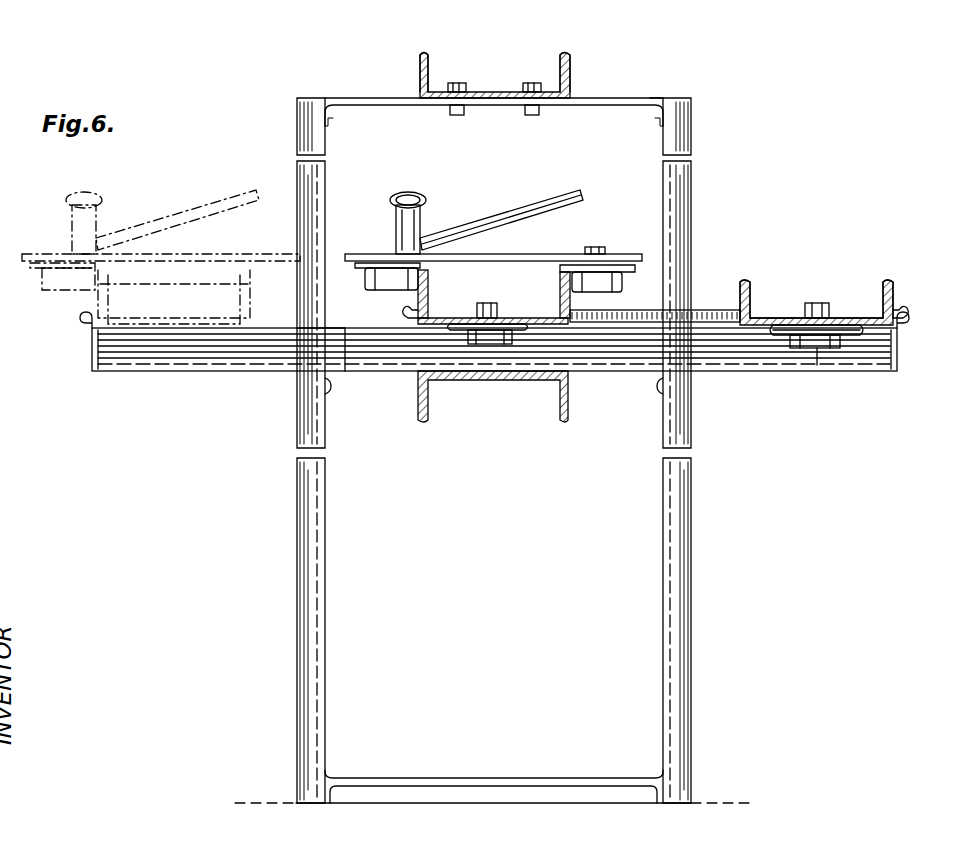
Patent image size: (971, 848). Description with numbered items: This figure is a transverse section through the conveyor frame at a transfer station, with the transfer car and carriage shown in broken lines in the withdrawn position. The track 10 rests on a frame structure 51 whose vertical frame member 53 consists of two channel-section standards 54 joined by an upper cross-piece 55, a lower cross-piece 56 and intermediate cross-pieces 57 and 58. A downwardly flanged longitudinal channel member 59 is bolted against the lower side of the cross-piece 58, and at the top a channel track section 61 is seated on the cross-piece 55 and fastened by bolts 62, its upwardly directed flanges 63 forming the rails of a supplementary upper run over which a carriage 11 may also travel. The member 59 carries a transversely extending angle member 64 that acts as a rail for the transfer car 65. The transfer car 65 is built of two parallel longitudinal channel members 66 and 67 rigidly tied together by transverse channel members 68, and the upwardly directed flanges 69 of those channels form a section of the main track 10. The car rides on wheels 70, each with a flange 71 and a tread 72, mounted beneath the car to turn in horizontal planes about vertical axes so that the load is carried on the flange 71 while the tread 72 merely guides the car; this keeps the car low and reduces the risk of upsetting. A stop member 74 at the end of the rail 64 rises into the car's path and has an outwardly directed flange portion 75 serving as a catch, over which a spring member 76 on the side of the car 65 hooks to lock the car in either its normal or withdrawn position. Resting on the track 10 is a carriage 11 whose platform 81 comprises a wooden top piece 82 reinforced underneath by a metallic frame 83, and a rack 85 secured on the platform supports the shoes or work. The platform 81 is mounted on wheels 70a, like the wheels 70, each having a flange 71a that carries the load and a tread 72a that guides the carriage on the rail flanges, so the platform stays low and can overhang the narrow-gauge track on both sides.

The track 10 is at (390, 395).
The carriage 11 is at (455, 215).
The frame structure 51 is at (292, 517).
The vertical frame member 53 is at (655, 86).
The vertical standard 54 is at (326, 600).
The upper cross-piece 55 is at (362, 98).
The lower cross-piece 56 is at (410, 777).
The intermediate cross-piece 57 is at (345, 330).
The intermediate cross-piece 58 is at (660, 385).
The longitudinally extending channel member 59 is at (568, 412).
The track section 61 is at (572, 76).
The bolt 62 is at (530, 84).
The flange 63 is at (428, 62).
The angle member 64 is at (825, 350).
The transfer car 65 is at (825, 290).
The longitudinal channel member 66 is at (893, 290).
The longitudinal channel member 67 is at (545, 322).
The transverse channel member 68 is at (740, 310).
The flange 69 is at (428, 292).
The wheel 70 is at (485, 336).
The wheel 70a is at (368, 284).
The wheel flange 71 is at (845, 340).
The wheel flange 71a is at (420, 266).
The wheel tread 72 is at (832, 350).
The wheel tread 72a is at (520, 292).
The stop member 74 is at (92, 345).
The flange portion 75 is at (82, 318).
The spring member 76 is at (410, 322).
The platform 81 is at (522, 242).
The wooden top piece 82 is at (615, 262).
The metallic frame 83 is at (545, 262).
The rack 85 is at (396, 220).